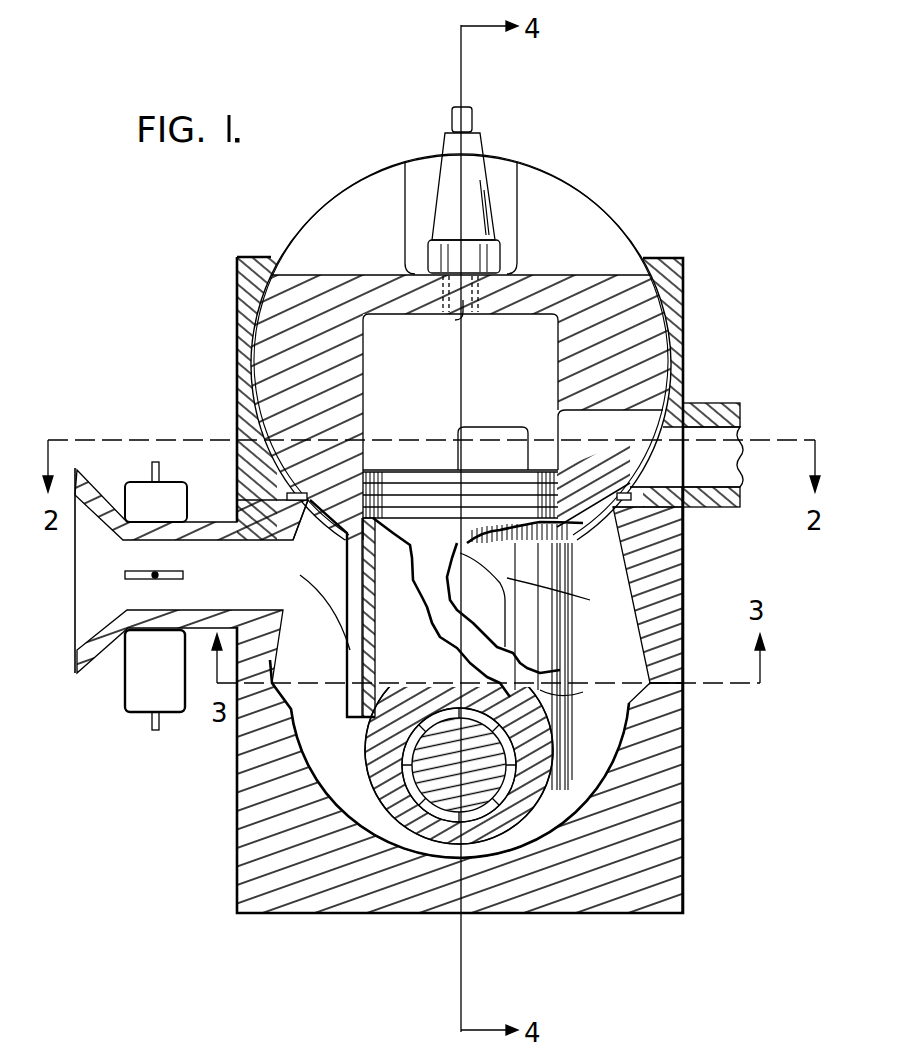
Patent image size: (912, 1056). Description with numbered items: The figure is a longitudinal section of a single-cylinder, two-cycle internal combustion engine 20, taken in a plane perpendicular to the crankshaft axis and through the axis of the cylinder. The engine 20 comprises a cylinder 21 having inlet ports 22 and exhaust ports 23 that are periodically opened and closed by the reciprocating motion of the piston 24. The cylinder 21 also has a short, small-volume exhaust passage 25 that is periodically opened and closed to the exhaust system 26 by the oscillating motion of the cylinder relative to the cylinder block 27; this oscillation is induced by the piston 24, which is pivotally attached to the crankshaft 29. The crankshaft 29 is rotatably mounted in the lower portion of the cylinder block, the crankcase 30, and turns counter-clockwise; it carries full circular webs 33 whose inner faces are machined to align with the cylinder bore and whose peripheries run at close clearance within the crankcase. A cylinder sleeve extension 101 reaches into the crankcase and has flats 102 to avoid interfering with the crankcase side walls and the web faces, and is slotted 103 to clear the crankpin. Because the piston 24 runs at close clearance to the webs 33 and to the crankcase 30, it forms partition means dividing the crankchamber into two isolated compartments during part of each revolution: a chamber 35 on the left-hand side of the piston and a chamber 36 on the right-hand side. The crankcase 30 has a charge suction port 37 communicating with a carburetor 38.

The two-cycle internal combustion engine 20 is at (704, 228).
The cylinder 21 is at (617, 274).
The inlet ports 22 is at (580, 375).
The exhaust ports 23 is at (686, 521).
The piston 24 is at (573, 560).
The exhaust passage 25 is at (637, 420).
The exhaust system 26 is at (680, 460).
The cylinder block 27 is at (675, 277).
The crankshaft 29 is at (550, 795).
The crankcase 30 is at (684, 730).
The crankshaft webs 33 is at (540, 747).
The left-hand crankchamber 35 is at (307, 683).
The right-hand crankchamber 36 is at (675, 662).
The crankcase port 37 is at (323, 742).
The carburetor 38 is at (125, 668).
The cylinder sleeve extension 101 is at (573, 583).
The flats or reliefs 102 is at (575, 613).
The slot 103 is at (585, 692).